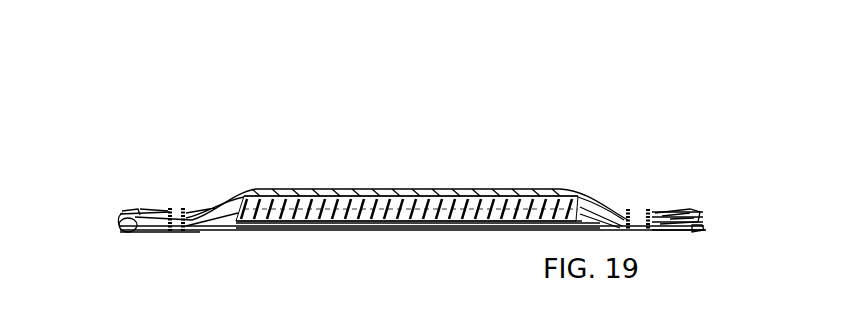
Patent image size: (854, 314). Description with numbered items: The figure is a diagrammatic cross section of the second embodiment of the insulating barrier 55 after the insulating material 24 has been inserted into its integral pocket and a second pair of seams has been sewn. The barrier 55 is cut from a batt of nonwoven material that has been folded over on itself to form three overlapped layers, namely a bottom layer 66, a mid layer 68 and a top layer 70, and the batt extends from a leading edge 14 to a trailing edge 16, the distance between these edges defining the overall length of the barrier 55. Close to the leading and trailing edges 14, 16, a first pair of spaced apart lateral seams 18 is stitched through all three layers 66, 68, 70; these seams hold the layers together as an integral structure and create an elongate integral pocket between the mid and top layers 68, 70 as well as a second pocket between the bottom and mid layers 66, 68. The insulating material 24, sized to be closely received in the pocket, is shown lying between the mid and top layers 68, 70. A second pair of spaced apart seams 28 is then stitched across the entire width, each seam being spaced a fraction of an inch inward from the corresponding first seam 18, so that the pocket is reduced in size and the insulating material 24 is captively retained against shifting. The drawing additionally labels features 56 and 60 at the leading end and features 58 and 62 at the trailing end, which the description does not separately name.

The leading edge 14 is at (108, 189).
The trailing edge 16 is at (705, 184).
The first pair of spaced apart lateral seams 18 is at (170, 208).
The insulating material 24 is at (334, 191).
The second pair of spaced apart seams 28 is at (186, 210).
The insulating barrier 55 is at (500, 165).
The first end knot 56 is at (119, 224).
The second end portion 58 is at (690, 209).
The end flap 60 is at (126, 211).
The tail 62 is at (696, 232).
The bottom layer 66 is at (422, 232).
The mid layer 68 is at (465, 232).
The top layer 70 is at (415, 193).